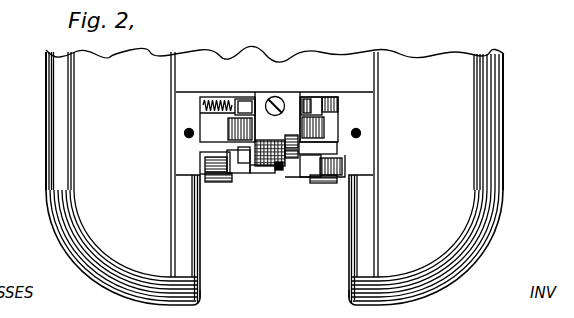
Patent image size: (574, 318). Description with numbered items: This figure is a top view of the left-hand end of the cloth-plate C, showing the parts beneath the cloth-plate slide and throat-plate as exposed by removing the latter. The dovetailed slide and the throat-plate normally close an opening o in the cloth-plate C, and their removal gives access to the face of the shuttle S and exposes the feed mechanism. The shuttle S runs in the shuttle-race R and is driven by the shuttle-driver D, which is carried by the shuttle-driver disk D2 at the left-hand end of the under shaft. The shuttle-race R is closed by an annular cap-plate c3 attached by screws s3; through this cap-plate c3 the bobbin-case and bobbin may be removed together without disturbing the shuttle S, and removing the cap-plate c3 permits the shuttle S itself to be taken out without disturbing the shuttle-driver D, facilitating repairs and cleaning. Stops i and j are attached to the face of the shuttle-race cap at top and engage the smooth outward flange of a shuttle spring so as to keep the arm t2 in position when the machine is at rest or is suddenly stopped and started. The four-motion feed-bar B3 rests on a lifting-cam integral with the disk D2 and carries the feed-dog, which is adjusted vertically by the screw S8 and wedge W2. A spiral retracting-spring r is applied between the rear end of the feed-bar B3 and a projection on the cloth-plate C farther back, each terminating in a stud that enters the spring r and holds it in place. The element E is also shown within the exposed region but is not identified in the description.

The cloth-plate C is at (123, 178).
The opening o is at (274, 279).
The shuttle-driver D is at (227, 120).
The spiral retracting-spring r is at (213, 98).
The wedge W2 is at (311, 106).
The four-motion feed-bar B3 is at (329, 97).
The block E is at (264, 117).
The screw S8 is at (281, 109).
The shuttle-driver disk D2 is at (318, 128).
The shuttle-race R is at (296, 150).
The annular cap-plate c3 is at (350, 162).
The stop i is at (238, 160).
The stop j is at (310, 165).
The screws s3 is at (272, 183).
The arm t2 is at (273, 170).
The shuttle S is at (279, 170).